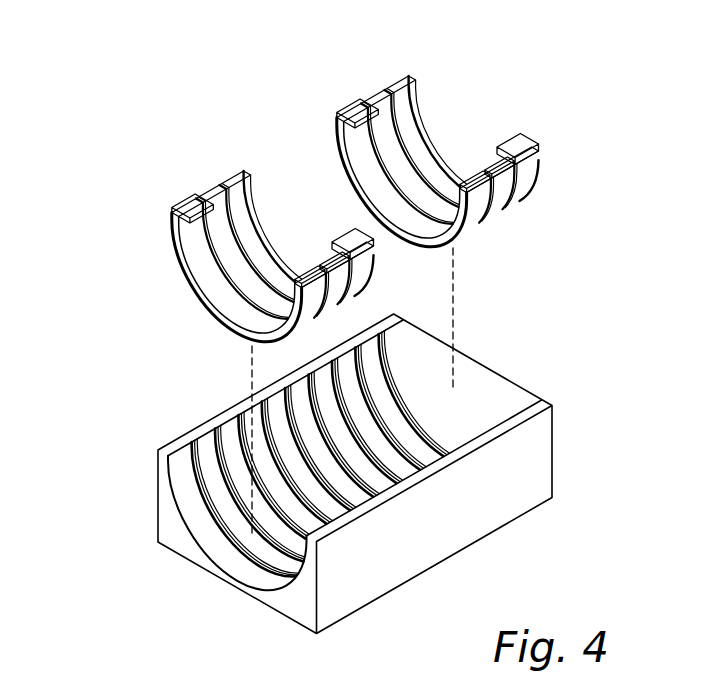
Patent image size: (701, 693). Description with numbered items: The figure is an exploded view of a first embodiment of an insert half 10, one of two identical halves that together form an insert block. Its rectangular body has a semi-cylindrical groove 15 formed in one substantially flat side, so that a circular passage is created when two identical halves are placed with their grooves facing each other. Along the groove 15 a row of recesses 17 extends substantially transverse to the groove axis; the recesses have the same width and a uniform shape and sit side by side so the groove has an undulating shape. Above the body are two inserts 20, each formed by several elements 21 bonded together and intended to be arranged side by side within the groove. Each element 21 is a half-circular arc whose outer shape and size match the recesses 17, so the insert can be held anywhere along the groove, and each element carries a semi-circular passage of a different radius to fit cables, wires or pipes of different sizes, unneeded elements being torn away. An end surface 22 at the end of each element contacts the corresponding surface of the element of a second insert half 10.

The insert half 10 is at (555, 436).
The semi-cylindrical groove 15 is at (177, 505).
The recesses 17 is at (213, 537).
The insert 20 is at (200, 189).
The elements 21 is at (243, 172).
The end surface 22 is at (174, 209).